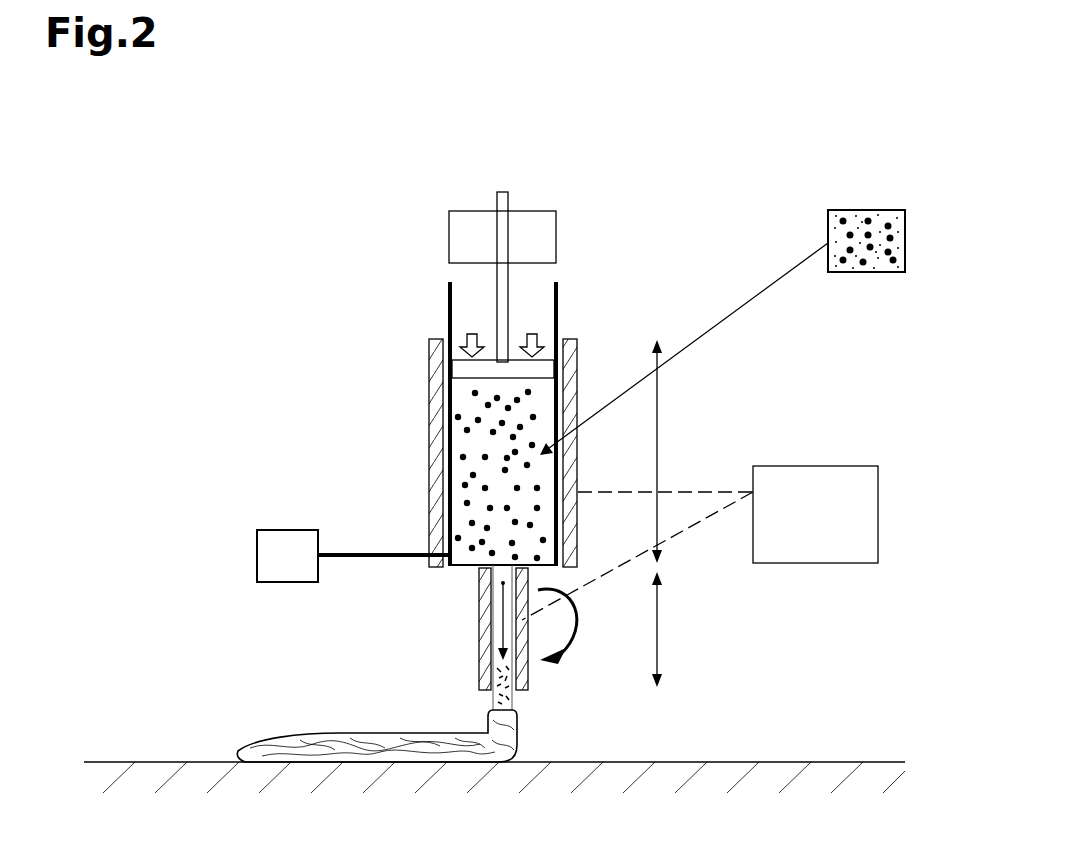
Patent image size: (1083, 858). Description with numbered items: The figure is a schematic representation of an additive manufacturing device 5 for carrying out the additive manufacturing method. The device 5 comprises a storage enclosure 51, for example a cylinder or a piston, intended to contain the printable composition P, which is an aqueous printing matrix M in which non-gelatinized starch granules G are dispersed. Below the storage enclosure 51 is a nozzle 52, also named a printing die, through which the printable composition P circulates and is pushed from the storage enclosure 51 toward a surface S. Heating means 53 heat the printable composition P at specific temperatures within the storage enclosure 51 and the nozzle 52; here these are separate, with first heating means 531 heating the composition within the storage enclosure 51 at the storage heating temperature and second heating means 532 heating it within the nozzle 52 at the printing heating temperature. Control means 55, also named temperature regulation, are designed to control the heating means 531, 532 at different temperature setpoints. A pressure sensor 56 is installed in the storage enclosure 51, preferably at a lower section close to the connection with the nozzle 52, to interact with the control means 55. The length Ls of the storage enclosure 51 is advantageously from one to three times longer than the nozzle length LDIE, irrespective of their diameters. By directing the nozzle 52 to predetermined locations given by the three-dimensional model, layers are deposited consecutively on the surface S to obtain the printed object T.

The additive manufacturing device 5 is at (447, 301).
The storage enclosure 51 is at (448, 483).
The nozzle 52 is at (471, 645).
The heating means 53 is at (427, 453).
The first heating means 531 is at (435, 384).
The second heating means 532 is at (479, 668).
The control means 55 is at (797, 483).
The pressure sensor 56 is at (352, 556).
The printable composition P is at (479, 627).
The aqueous printing matrix M is at (722, 323).
The non-gelatinized starch granules G is at (863, 268).
The printed object T is at (296, 760).
The surface S is at (160, 762).
The length of the storage enclosure Ls is at (677, 451).
The nozzle length LDIE is at (689, 629).